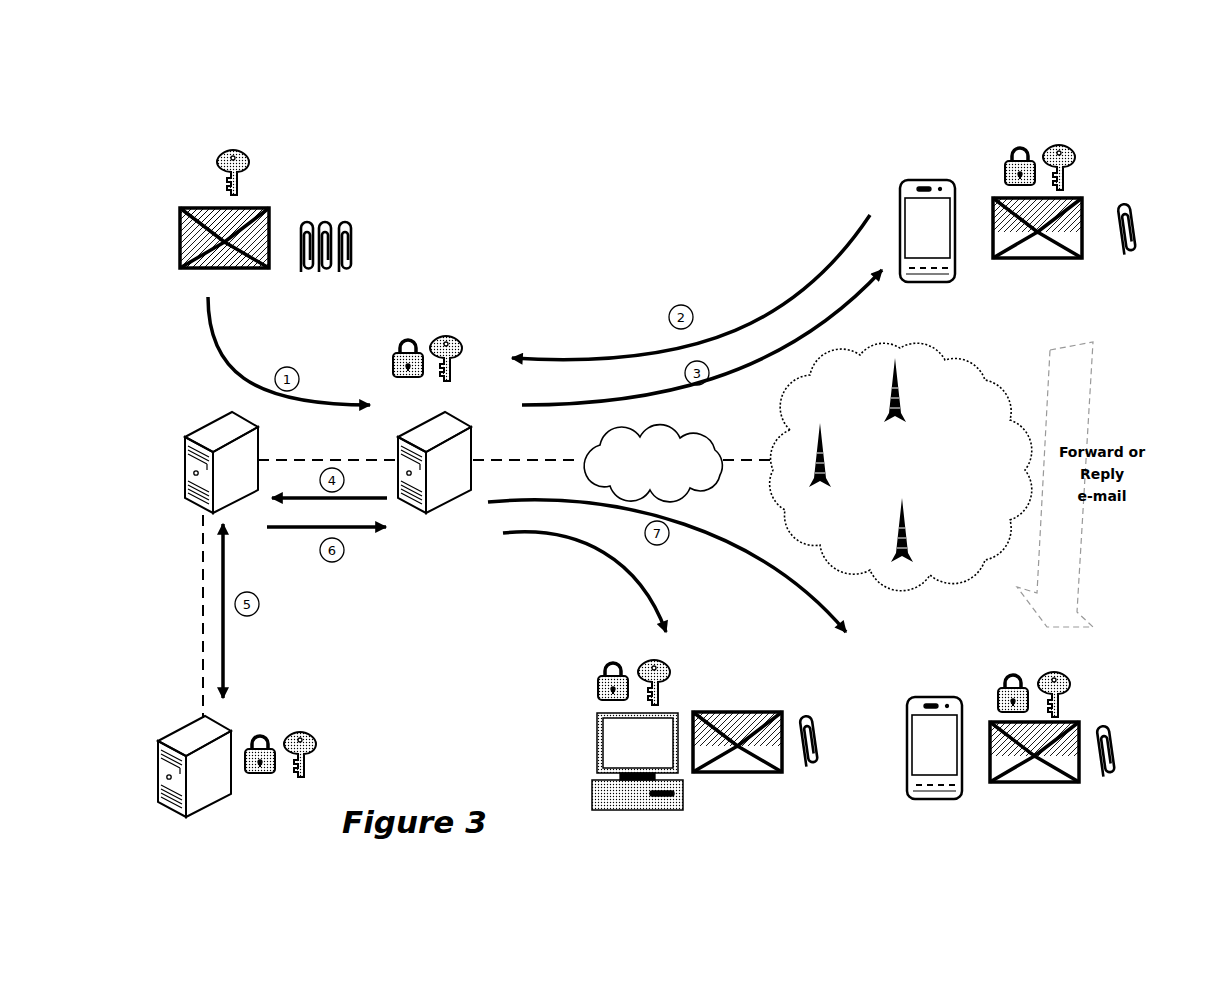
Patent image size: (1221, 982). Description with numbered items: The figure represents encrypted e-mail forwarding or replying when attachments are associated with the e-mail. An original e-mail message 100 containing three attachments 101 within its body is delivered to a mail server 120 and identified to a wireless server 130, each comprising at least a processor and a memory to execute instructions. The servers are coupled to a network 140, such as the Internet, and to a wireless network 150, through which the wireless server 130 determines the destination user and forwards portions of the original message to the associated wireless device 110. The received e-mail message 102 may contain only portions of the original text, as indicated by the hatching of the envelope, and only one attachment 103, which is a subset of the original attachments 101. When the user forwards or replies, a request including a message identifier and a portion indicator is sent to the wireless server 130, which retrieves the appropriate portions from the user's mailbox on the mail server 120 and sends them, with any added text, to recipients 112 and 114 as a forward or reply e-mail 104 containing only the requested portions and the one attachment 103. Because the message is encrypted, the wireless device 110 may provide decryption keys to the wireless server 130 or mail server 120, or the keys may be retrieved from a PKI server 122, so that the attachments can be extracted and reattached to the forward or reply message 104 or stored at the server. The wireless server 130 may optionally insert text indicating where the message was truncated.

The e-mail message 100 is at (200, 200).
The attachments 101 is at (356, 233).
The received e-mail message 102 is at (1090, 205).
The attachment 103 is at (1138, 223).
The forwarded message 104 is at (750, 788).
The wireless device 110 is at (899, 228).
The recipient 112 is at (596, 747).
The recipient 114 is at (906, 757).
The mail server 120 is at (201, 429).
The PKI server 122 is at (200, 716).
The wireless server 130 is at (446, 412).
The network 140 is at (580, 462).
The wireless network 150 is at (896, 350).